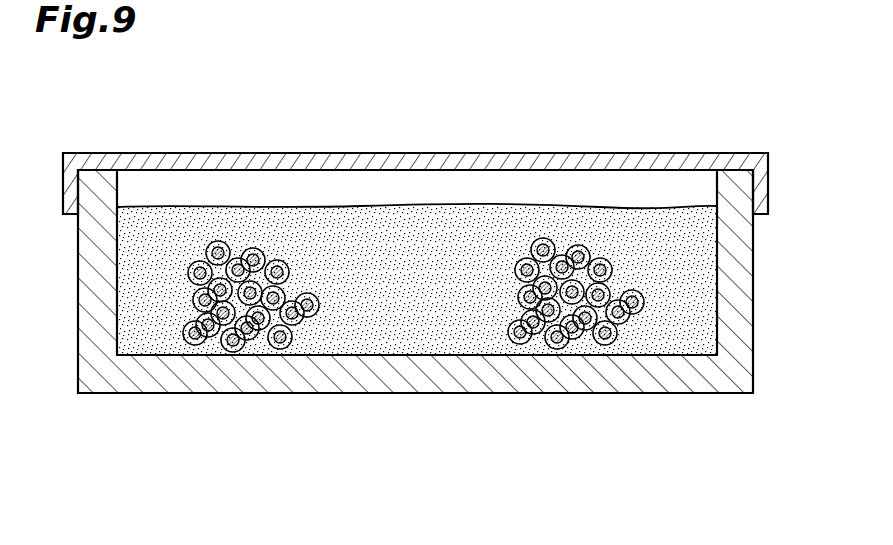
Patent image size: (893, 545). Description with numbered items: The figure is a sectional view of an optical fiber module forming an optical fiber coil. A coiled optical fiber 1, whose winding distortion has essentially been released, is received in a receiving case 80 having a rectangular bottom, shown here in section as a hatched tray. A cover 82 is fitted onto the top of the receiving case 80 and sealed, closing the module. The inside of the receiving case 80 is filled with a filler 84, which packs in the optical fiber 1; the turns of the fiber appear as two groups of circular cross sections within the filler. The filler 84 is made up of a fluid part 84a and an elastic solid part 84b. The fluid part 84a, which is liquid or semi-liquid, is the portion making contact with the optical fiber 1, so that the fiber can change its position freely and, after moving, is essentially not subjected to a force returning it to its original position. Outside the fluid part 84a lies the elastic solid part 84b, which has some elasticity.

The receiving case 80 is at (477, 393).
The cover 82 is at (453, 153).
The filler 84 is at (630, 98).
The fluid part 84a is at (544, 238).
The elastic solid part 84b is at (612, 215).
The optical fiber 1 is at (610, 344).